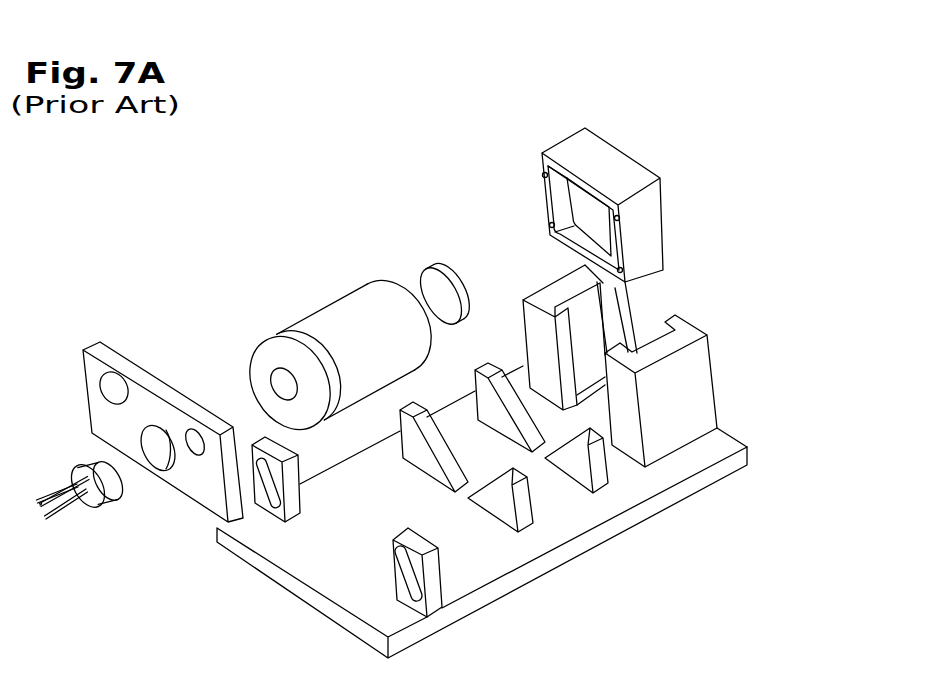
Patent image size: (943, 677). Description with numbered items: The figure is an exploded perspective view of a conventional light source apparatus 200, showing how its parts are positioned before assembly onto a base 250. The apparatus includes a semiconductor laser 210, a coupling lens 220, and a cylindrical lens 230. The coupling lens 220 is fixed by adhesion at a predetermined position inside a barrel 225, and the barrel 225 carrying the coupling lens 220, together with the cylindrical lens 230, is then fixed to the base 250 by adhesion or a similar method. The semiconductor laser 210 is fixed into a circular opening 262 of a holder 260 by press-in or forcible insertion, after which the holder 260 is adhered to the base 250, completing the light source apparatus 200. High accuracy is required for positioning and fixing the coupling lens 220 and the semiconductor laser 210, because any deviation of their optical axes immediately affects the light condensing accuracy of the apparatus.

The light source apparatus 200 is at (247, 208).
The semiconductor laser 210 is at (103, 512).
The coupling lens 220 is at (443, 268).
The barrel 225 is at (323, 322).
The cylindrical lens 230 is at (627, 173).
The base 250 is at (567, 562).
The holder 260 is at (128, 367).
The circular opening 262 is at (163, 447).